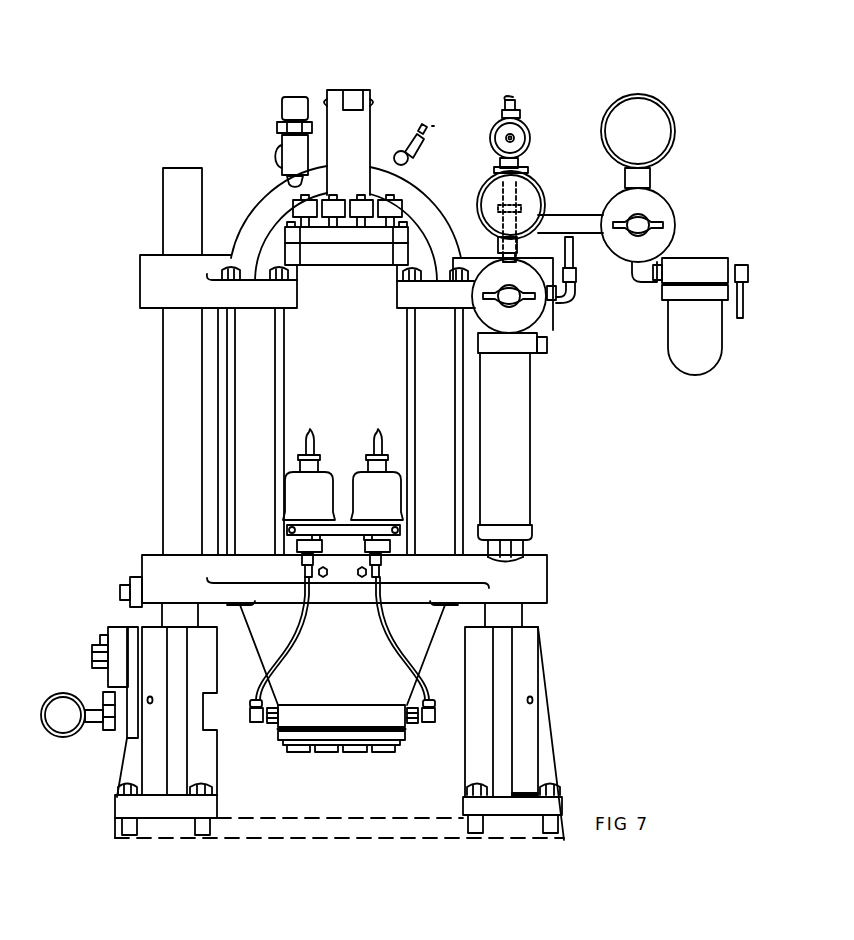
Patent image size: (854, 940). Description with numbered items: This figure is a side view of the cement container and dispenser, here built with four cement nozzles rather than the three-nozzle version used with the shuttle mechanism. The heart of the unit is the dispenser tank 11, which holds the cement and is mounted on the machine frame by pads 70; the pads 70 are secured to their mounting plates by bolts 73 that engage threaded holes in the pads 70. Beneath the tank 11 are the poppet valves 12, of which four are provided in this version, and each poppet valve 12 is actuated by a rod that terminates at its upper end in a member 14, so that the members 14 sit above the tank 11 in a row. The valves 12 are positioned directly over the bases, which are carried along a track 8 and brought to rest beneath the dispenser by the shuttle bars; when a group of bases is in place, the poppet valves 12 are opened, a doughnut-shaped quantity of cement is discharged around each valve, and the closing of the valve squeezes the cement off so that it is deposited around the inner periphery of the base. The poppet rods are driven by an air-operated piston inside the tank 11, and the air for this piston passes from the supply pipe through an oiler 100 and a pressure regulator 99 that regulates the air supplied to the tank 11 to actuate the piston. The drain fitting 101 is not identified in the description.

The track 8 is at (349, 13).
The dispenser tank 11 is at (362, 399).
The poppet valves 12 is at (358, 751).
The members 14 is at (387, 197).
The pads 70 is at (152, 760).
The bolts 73 is at (565, 787).
The pressure regulator 99 is at (673, 203).
The oiler 100 is at (700, 272).
The drain valve 101 is at (749, 301).